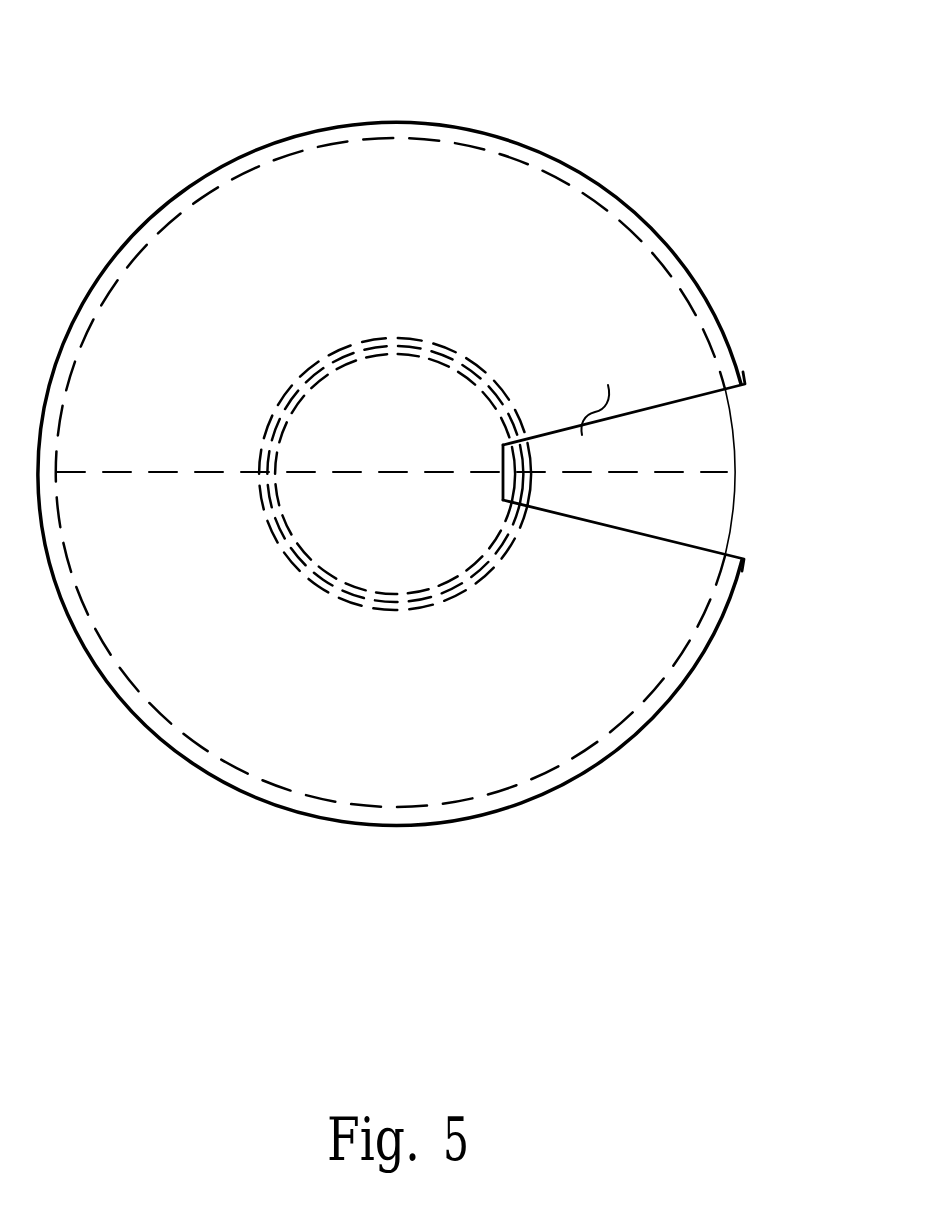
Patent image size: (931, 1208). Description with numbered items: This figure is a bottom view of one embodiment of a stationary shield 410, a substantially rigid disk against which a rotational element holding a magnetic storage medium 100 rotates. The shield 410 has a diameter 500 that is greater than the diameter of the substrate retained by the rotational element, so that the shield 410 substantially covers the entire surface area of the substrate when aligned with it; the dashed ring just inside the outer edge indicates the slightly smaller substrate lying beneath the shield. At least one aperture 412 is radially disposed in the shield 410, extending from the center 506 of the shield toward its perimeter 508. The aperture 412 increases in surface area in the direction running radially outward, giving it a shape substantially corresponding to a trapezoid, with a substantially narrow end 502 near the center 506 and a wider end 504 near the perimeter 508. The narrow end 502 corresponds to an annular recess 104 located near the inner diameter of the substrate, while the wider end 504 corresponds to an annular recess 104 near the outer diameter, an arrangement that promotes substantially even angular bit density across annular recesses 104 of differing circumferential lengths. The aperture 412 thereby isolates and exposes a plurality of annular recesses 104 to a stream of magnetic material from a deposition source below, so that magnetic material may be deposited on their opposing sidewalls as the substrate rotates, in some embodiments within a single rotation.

The magnetic storage medium 100 is at (695, 490).
The annular recess 104 is at (405, 337).
The stationary shield 410 is at (430, 230).
The aperture 412 is at (758, 412).
The diameter 500 is at (160, 472).
The narrow end 502 is at (500, 447).
The wider end 504 is at (735, 450).
The center 506 is at (393, 471).
The perimeter 508 is at (433, 122).